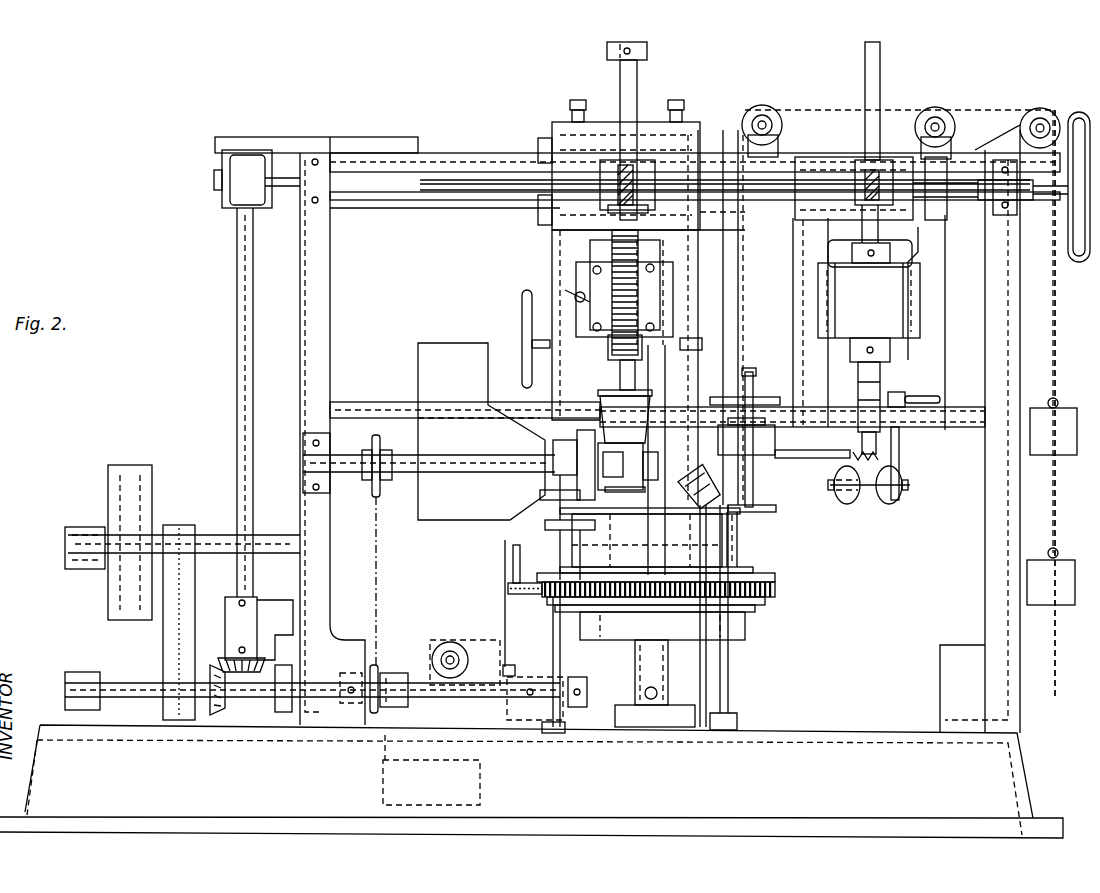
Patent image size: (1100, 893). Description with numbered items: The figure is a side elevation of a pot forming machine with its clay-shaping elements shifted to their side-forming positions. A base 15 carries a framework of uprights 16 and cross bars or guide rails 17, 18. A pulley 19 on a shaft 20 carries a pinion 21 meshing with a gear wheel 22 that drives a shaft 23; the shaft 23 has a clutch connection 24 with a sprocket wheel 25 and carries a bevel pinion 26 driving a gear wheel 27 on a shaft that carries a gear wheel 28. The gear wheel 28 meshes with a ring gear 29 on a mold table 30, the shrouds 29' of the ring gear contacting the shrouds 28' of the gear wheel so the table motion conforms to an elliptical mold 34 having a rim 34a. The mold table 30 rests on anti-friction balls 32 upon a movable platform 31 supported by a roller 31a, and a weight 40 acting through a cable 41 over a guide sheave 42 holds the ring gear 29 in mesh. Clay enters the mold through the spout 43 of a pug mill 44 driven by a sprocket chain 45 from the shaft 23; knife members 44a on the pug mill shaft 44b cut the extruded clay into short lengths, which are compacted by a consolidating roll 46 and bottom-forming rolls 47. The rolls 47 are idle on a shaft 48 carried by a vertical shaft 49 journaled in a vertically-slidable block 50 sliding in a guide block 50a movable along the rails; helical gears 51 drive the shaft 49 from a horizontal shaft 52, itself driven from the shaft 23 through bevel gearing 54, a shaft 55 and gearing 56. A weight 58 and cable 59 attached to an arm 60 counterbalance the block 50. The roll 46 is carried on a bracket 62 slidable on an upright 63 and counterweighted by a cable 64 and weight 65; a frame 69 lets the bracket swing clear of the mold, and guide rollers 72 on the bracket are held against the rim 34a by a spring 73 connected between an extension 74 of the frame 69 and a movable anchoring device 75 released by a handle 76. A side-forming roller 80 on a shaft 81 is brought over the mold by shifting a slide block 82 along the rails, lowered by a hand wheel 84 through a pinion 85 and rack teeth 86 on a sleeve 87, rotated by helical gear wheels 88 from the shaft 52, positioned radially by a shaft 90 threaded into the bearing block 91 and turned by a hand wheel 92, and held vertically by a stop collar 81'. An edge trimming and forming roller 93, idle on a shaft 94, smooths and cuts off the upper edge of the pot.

The base 15 is at (800, 733).
The uprights 16 is at (330, 340).
The guide rail 17 is at (378, 200).
The guide rail 18 is at (372, 402).
The pulley 19 is at (135, 465).
The shaft 20 is at (215, 535).
The pinion 21 is at (185, 525).
The gear wheel 22 is at (163, 640).
The shaft 23 is at (125, 683).
The clutch connection 24 is at (388, 673).
The sprocket wheel 25 is at (355, 673).
The bevel pinion 26 is at (520, 678).
The gear wheel 27 is at (513, 660).
The gear wheel 28 is at (525, 602).
The shrouds 28' is at (532, 633).
The ring gear 29 is at (674, 589).
The shrouds 29' is at (681, 608).
The mold table 30 is at (765, 575).
The movable platform 31 is at (720, 640).
The roller 31a is at (660, 705).
The anti-friction balls 32 is at (745, 620).
The mold 34 is at (740, 540).
The rim 34a is at (656, 540).
The weight 40 is at (478, 773).
The cable 41 is at (432, 745).
The guide sheave 42 is at (432, 655).
The spout 43 is at (628, 456).
The pug mill 44 is at (418, 440).
The knife members 44a is at (612, 492).
The pug mill shaft 44b is at (362, 455).
The sprocket chain 45 is at (376, 520).
The consolidating roll 46 is at (700, 505).
The bottom-forming rolls 47 is at (855, 498).
The shaft 48 is at (905, 485).
The vertical shaft 49 is at (880, 78).
The vertically-slidable block 50 is at (920, 292).
The guide block 50a is at (905, 330).
The helical gears 51 is at (875, 165).
The horizontal shaft 52 is at (462, 192).
The bevel gearing 54 is at (232, 715).
The shaft 55 is at (237, 268).
The gearing 56 is at (230, 178).
The weight 58 is at (1062, 562).
The cable 59 is at (1053, 515).
The arm 60 is at (922, 258).
The bracket 62 is at (775, 440).
The upright 63 is at (738, 350).
The cable 64 is at (743, 320).
The weight 65 is at (1035, 405).
The frame 69 is at (758, 395).
The guide rollers 72 is at (776, 512).
The spring 73 is at (858, 455).
The extension 74 is at (790, 458).
The movable anchoring device 75 is at (899, 450).
The handle 76 is at (940, 399).
The side-forming roller 80 is at (625, 401).
The shaft 81 is at (645, 140).
The stop collar 81' is at (654, 49).
The slide block 82 is at (598, 122).
The hand wheel 84 is at (522, 330).
The pinion 85 is at (612, 355).
The rack teeth 86 is at (576, 275).
The sleeve 87 is at (612, 250).
The helical gear wheels 88 is at (612, 212).
The shaft 90 is at (1030, 198).
The bearing block 91 is at (600, 180).
The hand wheel 92 is at (1070, 238).
The edge trimming and forming roller 93 is at (553, 472).
The shaft 94 is at (553, 525).